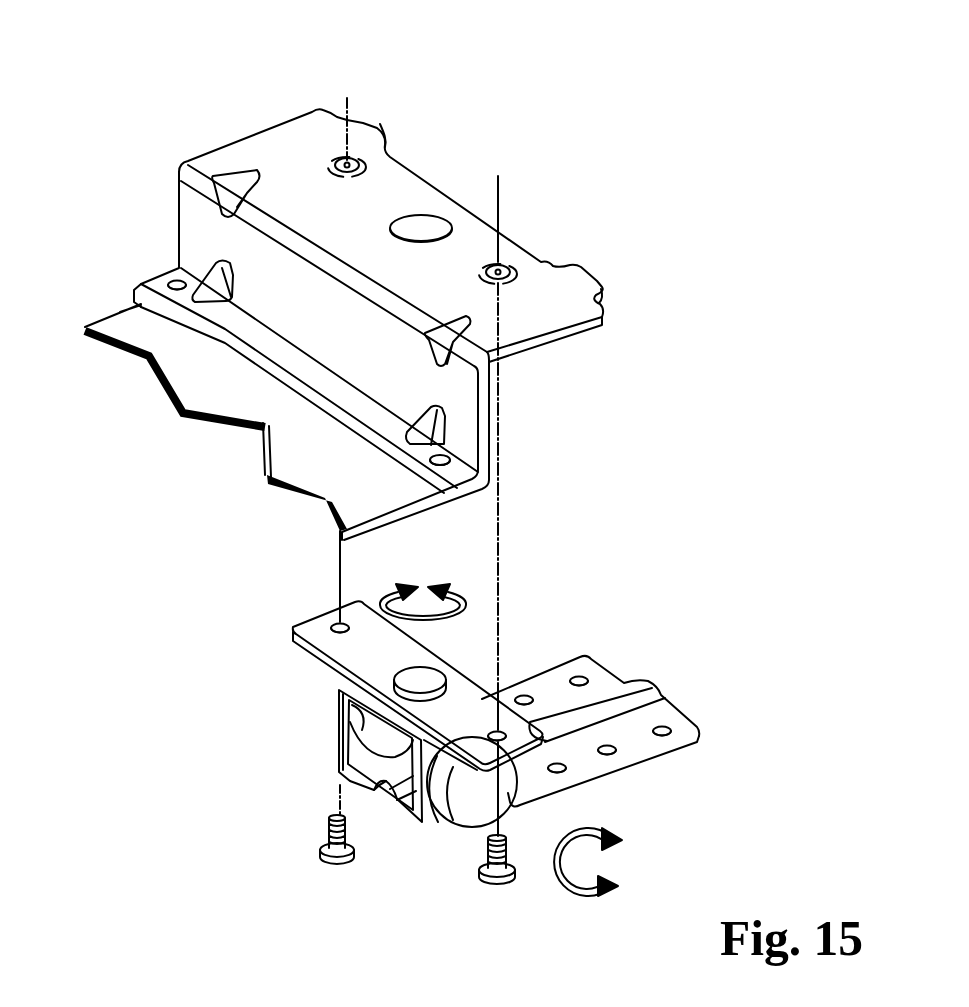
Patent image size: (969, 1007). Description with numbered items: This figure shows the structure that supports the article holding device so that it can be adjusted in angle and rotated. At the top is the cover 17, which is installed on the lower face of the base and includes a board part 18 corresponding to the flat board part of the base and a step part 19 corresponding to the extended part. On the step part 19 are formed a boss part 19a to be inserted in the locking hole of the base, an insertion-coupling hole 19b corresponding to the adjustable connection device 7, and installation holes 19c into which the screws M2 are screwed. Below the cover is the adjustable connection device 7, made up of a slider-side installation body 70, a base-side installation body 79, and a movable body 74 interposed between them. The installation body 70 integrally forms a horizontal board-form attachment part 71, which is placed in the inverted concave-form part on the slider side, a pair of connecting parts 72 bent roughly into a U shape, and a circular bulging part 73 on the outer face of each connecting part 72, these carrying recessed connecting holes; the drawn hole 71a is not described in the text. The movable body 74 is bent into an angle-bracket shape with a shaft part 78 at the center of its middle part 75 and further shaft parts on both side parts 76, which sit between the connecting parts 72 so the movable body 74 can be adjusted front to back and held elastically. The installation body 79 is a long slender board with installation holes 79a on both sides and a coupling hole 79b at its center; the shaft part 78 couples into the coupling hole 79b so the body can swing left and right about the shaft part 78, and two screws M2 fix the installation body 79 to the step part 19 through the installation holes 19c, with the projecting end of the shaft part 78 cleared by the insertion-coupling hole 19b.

The cover 17 is at (287, 112).
The board part 18 is at (158, 330).
The step part 19 is at (248, 150).
The boss part 19a is at (378, 132).
The insertion-coupling hole 19b is at (420, 228).
The installation holes 19c is at (347, 160).
The adjustable connection device 7 is at (700, 708).
The slider-side installation body 70 is at (674, 750).
The attachment part 71 is at (590, 670).
The hinge hole 71a is at (580, 680).
The connecting parts 72 is at (340, 765).
The bulging part 73 is at (340, 690).
The movable body 74 is at (252, 714).
The middle part 75 is at (368, 722).
The side parts 76 is at (345, 740).
The shaft part 78 is at (420, 680).
The base-side installation body 79 is at (320, 636).
The installation holes 79a is at (338, 622).
The coupling hole 79b is at (495, 697).
The screws M2 is at (337, 870).